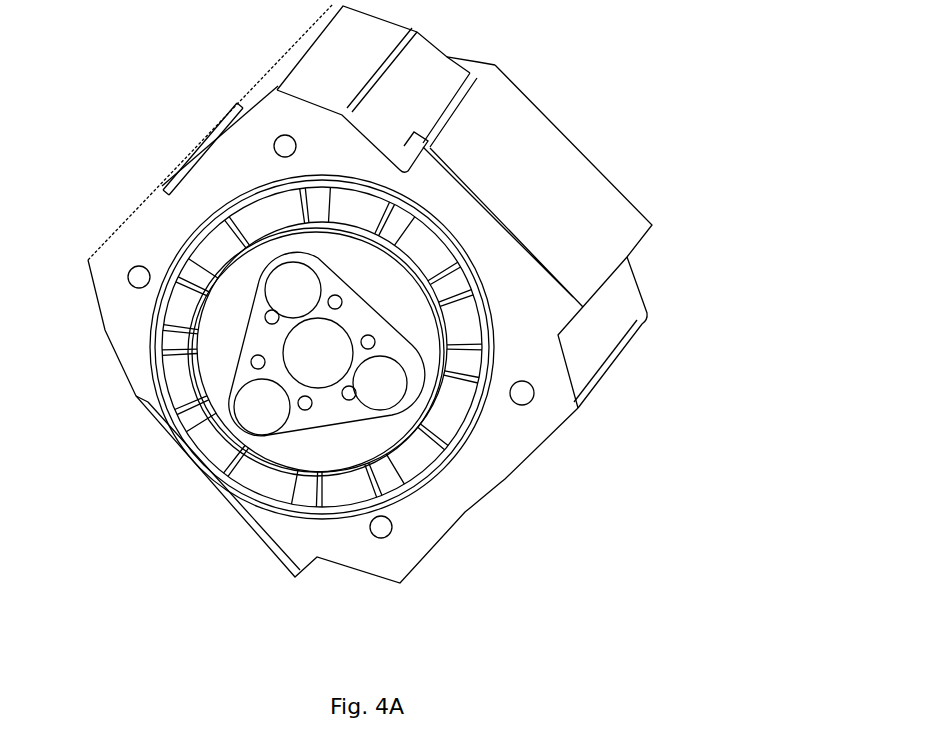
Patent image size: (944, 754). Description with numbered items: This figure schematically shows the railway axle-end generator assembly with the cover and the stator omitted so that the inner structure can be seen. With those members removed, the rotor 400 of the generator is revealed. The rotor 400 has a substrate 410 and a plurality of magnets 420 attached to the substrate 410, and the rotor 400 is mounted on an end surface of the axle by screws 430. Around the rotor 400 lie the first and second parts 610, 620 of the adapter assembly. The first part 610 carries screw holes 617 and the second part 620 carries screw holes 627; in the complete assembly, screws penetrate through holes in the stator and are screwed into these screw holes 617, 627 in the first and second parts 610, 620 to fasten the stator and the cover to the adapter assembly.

The rotor 400 is at (264, 413).
The substrate 410 is at (322, 452).
The magnets 420 is at (277, 487).
The screws 430 is at (257, 408).
The first part 610 is at (553, 223).
The screw holes 617 is at (371, 527).
The second part 620 is at (472, 147).
The screw holes 627 is at (143, 284).